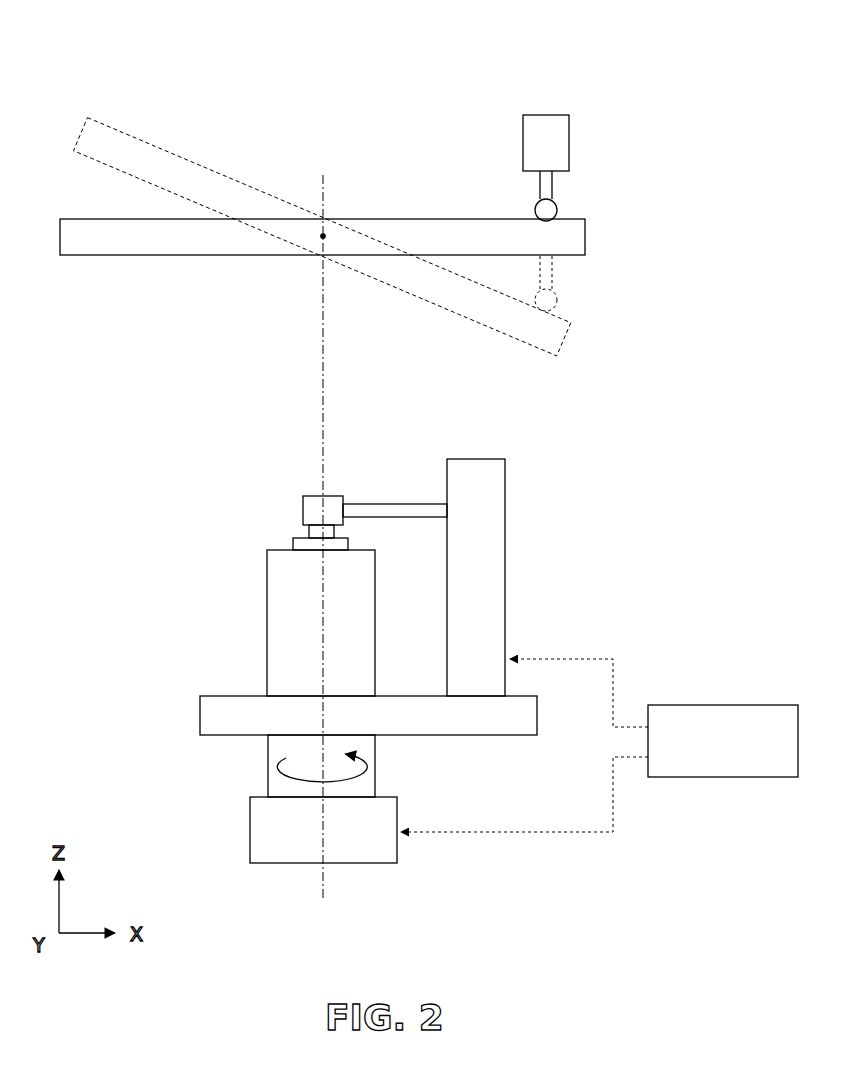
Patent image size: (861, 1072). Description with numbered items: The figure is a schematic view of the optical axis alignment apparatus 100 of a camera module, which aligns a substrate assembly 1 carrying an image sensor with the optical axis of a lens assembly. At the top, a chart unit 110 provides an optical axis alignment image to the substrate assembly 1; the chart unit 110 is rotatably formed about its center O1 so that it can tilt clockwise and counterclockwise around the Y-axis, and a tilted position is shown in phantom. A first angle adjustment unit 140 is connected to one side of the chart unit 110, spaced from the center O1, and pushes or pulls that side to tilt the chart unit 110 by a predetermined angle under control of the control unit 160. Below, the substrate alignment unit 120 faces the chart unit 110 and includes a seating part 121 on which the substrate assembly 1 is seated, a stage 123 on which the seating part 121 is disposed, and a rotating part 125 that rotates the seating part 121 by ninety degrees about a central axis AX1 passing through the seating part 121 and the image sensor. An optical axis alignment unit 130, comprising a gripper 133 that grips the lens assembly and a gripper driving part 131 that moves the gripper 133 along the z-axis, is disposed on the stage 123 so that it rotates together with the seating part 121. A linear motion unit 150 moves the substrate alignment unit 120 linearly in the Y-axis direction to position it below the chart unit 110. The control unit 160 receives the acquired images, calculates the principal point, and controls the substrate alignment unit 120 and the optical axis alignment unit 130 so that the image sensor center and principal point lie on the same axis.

The optical axis alignment apparatus 100 is at (688, 49).
The chart unit 110 is at (585, 237).
The first angle adjustment unit 140 is at (569, 140).
The center of the chart unit O1 is at (325, 235).
The central axis AX1 is at (323, 880).
The optical axis alignment unit 130 is at (404, 531).
The gripper driving part 131 is at (473, 467).
The gripper 133 is at (375, 467).
The substrate assembly 1 is at (276, 534).
The substrate alignment unit 120 is at (301, 673).
The seating part 121 is at (276, 641).
The stage 123 is at (205, 717).
The rotating part 125 is at (272, 763).
The linear motion unit 150 is at (255, 828).
The control unit 160 is at (720, 705).